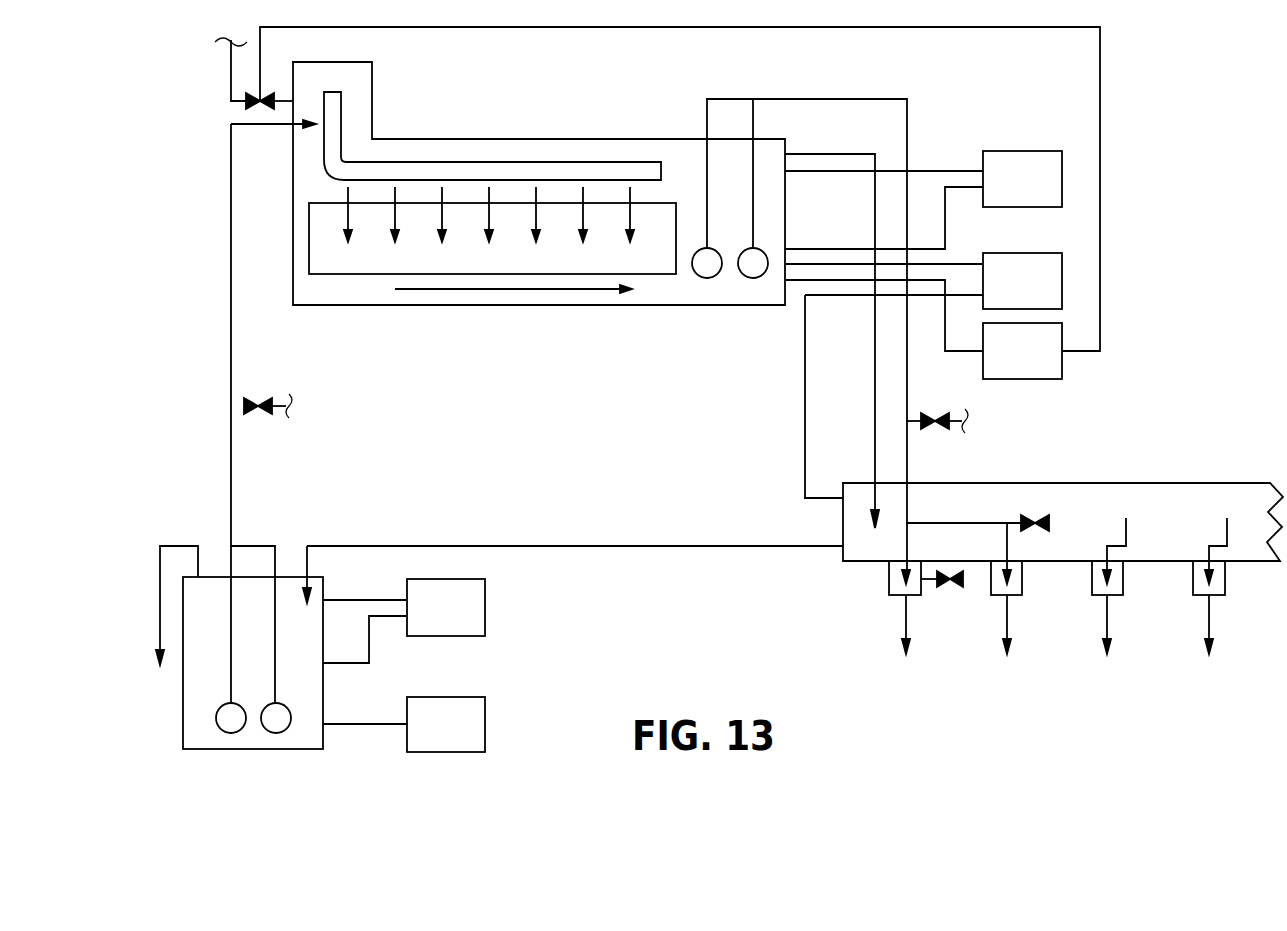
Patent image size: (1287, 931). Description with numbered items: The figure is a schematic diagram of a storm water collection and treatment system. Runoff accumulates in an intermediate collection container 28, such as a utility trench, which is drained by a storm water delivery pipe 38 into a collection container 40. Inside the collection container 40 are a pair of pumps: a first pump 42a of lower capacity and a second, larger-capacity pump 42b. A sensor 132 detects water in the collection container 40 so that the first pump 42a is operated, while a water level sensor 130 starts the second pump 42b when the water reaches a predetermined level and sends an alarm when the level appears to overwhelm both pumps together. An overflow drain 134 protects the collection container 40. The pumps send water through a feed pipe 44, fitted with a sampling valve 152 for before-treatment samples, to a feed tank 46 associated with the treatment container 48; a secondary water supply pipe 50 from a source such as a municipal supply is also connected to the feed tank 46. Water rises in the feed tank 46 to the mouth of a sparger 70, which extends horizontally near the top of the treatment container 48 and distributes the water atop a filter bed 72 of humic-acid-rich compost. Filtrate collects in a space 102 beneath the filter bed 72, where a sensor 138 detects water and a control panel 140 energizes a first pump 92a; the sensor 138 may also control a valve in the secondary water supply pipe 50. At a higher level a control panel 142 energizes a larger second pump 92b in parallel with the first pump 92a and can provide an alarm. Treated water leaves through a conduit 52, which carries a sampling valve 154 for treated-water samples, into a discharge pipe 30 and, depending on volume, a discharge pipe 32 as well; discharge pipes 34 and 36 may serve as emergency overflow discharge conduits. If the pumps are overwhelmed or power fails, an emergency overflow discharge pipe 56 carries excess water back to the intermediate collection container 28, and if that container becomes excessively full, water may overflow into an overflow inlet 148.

The intermediate collection container 28 is at (1045, 483).
The discharge pipe 30 is at (907, 617).
The discharge pipe 32 is at (1008, 617).
The discharge pipe 34 is at (1108, 617).
The discharge pipe 36 is at (1210, 617).
The storm water delivery pipe 38 is at (543, 545).
The collection container 40 is at (183, 718).
The first pump 42a is at (231, 733).
The second pump 42b is at (276, 733).
The feed pipe 44 is at (230, 344).
The feed tank 46 is at (346, 62).
The treatment container 48 is at (615, 139).
The secondary water supply pipe 50 is at (231, 70).
The conduit 52 is at (907, 452).
The emergency overflow discharge pipe 56 is at (875, 452).
The sparger 70 is at (515, 161).
The filter bed 72 is at (309, 240).
The first pump 92a is at (707, 278).
The second pump 92b is at (753, 278).
The filtrate collection space 102 is at (514, 306).
The water level sensor 130 is at (429, 621).
The sensor 132 is at (429, 738).
The overflow drain 134 is at (160, 585).
The sensor 138 is at (1005, 364).
The control panel 140 is at (1005, 294).
The control panel 142 is at (1005, 192).
The overflow inlet 148 is at (1126, 532).
The sampling valve 152 is at (256, 397).
The sampling valve 154 is at (934, 413).